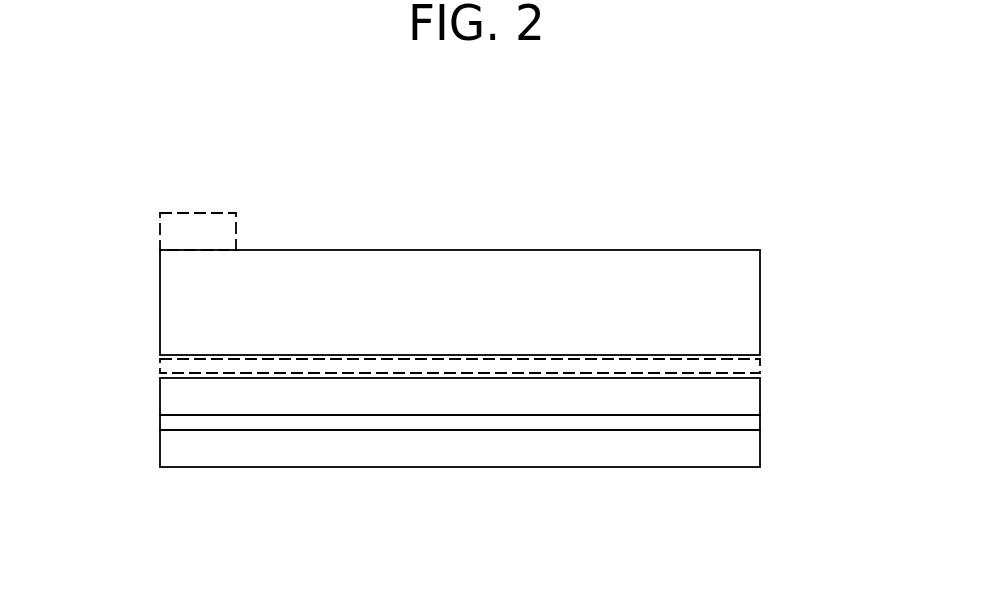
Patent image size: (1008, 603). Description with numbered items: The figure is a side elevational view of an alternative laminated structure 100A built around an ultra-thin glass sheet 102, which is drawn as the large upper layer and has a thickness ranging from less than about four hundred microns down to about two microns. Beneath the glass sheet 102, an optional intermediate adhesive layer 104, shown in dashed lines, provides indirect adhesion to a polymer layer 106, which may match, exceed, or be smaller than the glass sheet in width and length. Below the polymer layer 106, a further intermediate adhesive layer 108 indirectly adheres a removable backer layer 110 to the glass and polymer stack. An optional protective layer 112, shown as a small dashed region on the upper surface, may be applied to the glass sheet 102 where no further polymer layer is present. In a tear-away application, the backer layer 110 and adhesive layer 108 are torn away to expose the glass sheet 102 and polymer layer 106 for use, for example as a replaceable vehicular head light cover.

The alternative laminated structure 100A is at (494, 143).
The ultra-thin glass sheet 102 is at (760, 295).
The intermediate adhesive layer 104 is at (760, 364).
The polymer layer 106 is at (760, 397).
The intermediate adhesive layer 108 is at (160, 422).
The removable backer layer 110 is at (160, 458).
The protective layer 112 is at (160, 226).